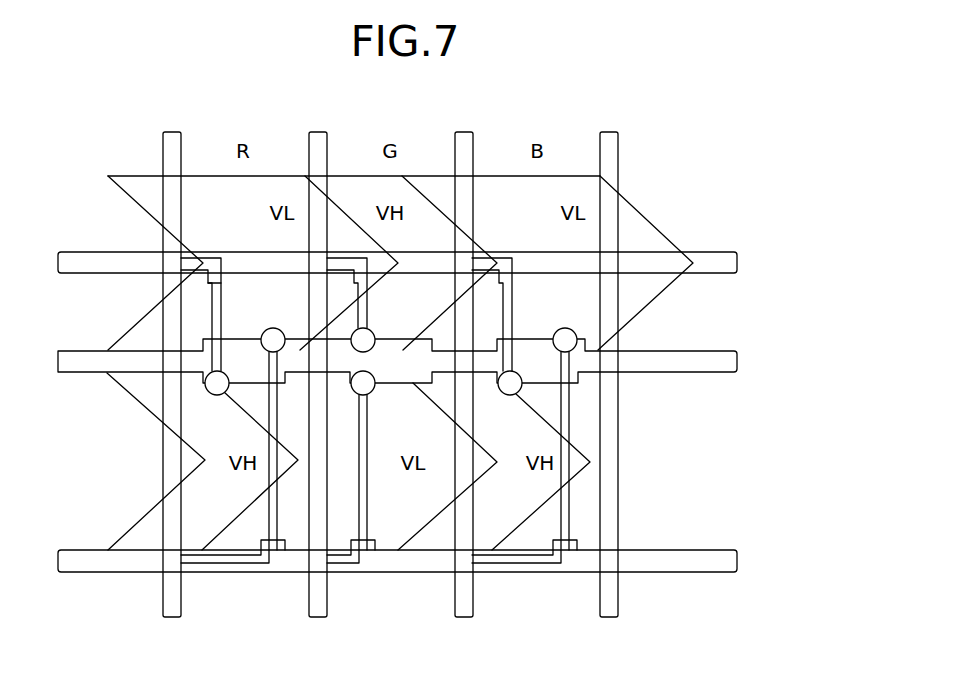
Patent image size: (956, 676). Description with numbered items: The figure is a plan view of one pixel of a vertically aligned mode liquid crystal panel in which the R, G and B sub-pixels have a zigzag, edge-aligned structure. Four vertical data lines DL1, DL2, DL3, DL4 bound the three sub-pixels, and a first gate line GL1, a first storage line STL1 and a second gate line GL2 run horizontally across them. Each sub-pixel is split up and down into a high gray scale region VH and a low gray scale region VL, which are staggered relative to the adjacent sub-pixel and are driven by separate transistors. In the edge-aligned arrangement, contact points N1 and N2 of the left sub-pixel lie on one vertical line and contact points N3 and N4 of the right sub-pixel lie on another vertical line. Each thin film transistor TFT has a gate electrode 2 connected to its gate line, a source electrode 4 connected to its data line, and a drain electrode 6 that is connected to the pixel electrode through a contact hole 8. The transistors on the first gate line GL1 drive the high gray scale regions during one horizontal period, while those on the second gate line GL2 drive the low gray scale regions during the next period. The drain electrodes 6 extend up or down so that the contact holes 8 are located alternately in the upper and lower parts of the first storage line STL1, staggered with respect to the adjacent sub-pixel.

The first data line DL1 is at (172, 132).
The second data line DL2 is at (318, 132).
The third data line DL3 is at (464, 132).
The fourth data line DL4 is at (609, 132).
The first gate line GL1 is at (738, 262).
The second gate line GL2 is at (738, 561).
The first storage line STL1 is at (738, 361).
The thin film transistor TFT is at (232, 282).
The contact point N1 is at (201, 254).
The contact point N2 is at (202, 456).
The contact point N3 is at (495, 262).
The contact point N4 is at (495, 460).
The gate electrode 2 is at (205, 278).
The source electrode 4 is at (233, 257).
The drain electrode 6 is at (223, 284).
The contact hole 8 is at (228, 381).